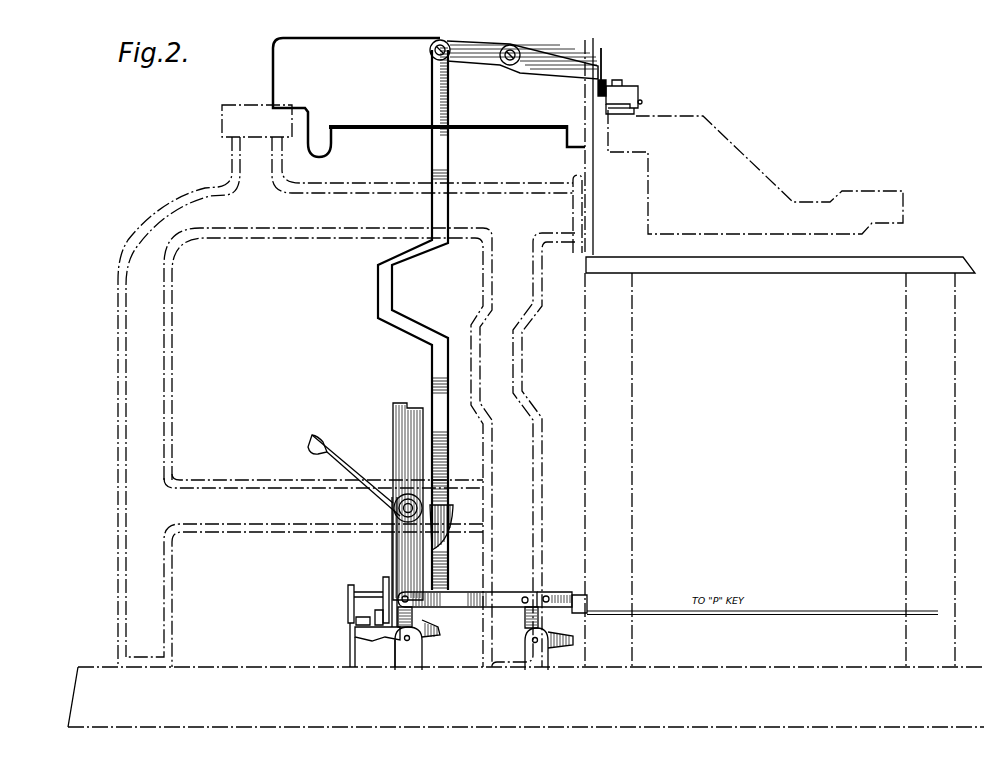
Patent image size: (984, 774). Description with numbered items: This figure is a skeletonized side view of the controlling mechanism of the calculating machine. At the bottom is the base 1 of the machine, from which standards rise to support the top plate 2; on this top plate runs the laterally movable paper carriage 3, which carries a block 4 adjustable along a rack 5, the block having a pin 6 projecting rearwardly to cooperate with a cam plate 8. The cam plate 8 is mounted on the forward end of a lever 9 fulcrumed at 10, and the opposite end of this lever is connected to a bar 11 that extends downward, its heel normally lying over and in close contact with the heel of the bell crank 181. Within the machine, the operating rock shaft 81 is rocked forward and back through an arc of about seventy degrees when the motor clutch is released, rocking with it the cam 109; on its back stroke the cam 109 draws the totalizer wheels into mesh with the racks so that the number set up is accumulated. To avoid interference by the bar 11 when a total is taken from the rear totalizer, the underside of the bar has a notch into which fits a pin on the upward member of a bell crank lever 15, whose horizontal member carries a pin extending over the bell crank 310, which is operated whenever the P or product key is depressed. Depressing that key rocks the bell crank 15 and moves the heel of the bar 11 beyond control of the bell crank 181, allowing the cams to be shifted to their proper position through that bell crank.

The base 1 is at (789, 667).
The top plate 2 is at (732, 268).
The paper carriage 3 is at (722, 142).
The block 4 is at (629, 87).
The rack 5 is at (622, 110).
The pin 6 is at (598, 90).
The cam plate 8 is at (603, 66).
The lever 9 is at (541, 52).
The fulcrum 10 is at (502, 65).
The bar 11 is at (433, 72).
The bell crank lever 15 is at (350, 605).
The operating rock shaft 81 is at (397, 515).
The cam 109 is at (393, 412).
The bell crank 181 is at (392, 567).
The bell crank 310 is at (378, 637).